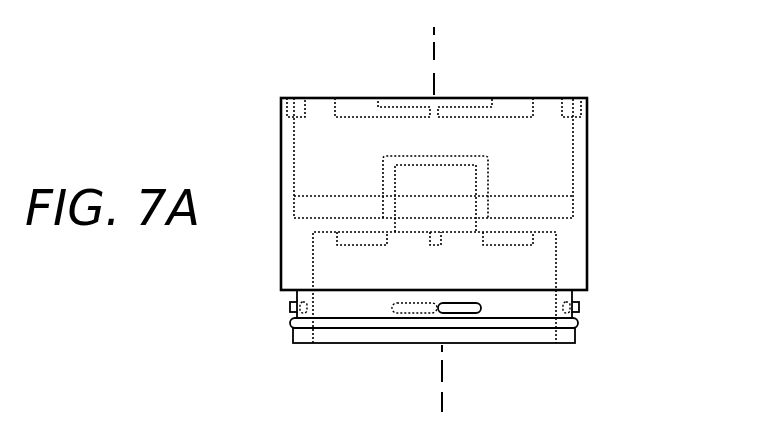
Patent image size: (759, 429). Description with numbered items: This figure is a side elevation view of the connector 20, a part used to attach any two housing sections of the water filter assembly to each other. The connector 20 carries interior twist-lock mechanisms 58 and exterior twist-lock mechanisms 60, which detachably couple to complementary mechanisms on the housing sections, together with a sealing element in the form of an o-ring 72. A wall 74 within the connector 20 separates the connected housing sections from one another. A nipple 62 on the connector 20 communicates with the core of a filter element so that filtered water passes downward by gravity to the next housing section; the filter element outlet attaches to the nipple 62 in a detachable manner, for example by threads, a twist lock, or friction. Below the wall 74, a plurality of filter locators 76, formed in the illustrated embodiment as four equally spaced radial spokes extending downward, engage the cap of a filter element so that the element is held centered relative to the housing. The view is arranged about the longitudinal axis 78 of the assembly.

The connector 20 is at (605, 115).
The interior twist-lock mechanisms 58 is at (290, 115).
The exterior twist-lock mechanisms 60 is at (290, 307).
The nipple 62 is at (485, 180).
The o-ring 72 is at (577, 327).
The wall 74 is at (433, 158).
The filter locators 76 is at (518, 238).
The longitudinal axis 78 is at (435, 55).